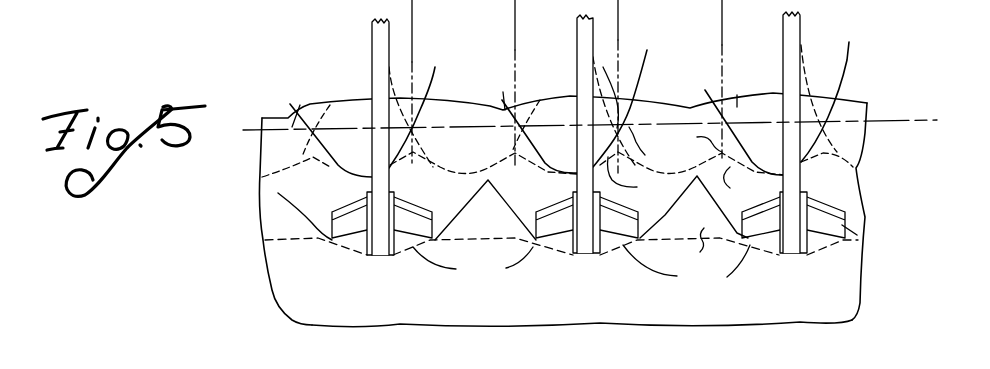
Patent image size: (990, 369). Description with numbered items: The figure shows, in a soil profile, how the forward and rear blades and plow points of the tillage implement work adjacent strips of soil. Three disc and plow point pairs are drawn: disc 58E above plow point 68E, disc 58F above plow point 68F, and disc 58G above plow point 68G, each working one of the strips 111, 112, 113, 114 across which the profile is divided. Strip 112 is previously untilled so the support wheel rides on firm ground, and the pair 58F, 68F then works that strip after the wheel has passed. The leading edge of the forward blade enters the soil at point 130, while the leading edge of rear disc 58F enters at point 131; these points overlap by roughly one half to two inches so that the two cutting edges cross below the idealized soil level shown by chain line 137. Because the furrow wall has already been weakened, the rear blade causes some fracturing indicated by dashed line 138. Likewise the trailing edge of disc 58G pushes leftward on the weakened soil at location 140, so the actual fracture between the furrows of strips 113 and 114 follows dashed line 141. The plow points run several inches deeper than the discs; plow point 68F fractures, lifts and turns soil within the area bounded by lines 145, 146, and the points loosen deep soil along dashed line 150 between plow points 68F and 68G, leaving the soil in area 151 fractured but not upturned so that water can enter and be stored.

The disc 58E is at (435, 67).
The disc 58F is at (656, 38).
The disc 58G is at (849, 55).
The plow point 68E is at (381, 256).
The plow point 68F is at (588, 253).
The plow point 68G is at (793, 253).
The strip 111 is at (441, 82).
The strip 112 is at (546, 82).
The strip 113 is at (650, 86).
The strip 114 is at (747, 79).
The point of entry of leading edge 130 is at (617, 88).
The point of entry of leading edge 131 is at (653, 147).
The idealized soil level line 137 is at (873, 121).
The fracture line 138 is at (640, 179).
The location of leftward force 140 is at (692, 138).
The soil fracture line 141 is at (741, 183).
The fracture line 145 is at (508, 204).
The fracture line 146 is at (675, 205).
The deep fracture line 150 is at (581, 266).
The fractured soil area 151 is at (684, 246).